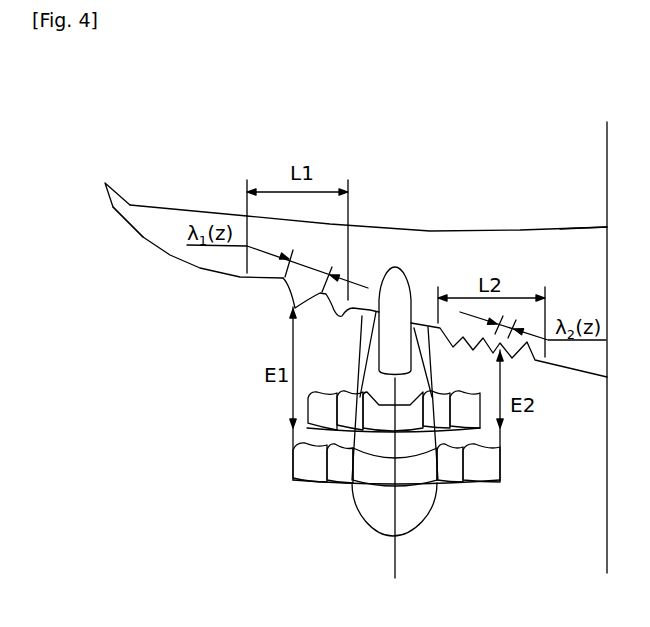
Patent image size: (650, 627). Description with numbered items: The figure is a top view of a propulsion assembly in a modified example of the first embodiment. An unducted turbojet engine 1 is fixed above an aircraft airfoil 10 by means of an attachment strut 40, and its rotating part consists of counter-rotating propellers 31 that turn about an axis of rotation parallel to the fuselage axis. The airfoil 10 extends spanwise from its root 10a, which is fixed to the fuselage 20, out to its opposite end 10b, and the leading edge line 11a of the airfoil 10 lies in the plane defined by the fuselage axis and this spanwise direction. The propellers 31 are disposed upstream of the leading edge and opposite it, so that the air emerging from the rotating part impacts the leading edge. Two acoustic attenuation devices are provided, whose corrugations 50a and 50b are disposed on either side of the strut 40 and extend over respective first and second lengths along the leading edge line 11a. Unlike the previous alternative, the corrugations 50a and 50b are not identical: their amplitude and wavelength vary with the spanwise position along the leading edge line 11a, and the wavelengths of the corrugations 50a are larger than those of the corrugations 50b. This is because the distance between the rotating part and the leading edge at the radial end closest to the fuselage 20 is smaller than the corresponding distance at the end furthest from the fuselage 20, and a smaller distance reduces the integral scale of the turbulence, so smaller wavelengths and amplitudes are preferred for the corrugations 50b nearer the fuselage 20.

The turbojet engine 1 is at (332, 545).
The airfoil 10 is at (508, 245).
The root 10a is at (605, 227).
The opposite end 10b is at (105, 183).
The leading edge line 11a is at (202, 268).
The fuselage 20 is at (590, 537).
The counter-rotating propellers 31 is at (313, 407).
The attachment strut 40 is at (394, 267).
The corrugations of the first acoustic attenuation device 50a is at (260, 305).
The corrugations of the second acoustic attenuation device 50b is at (538, 378).